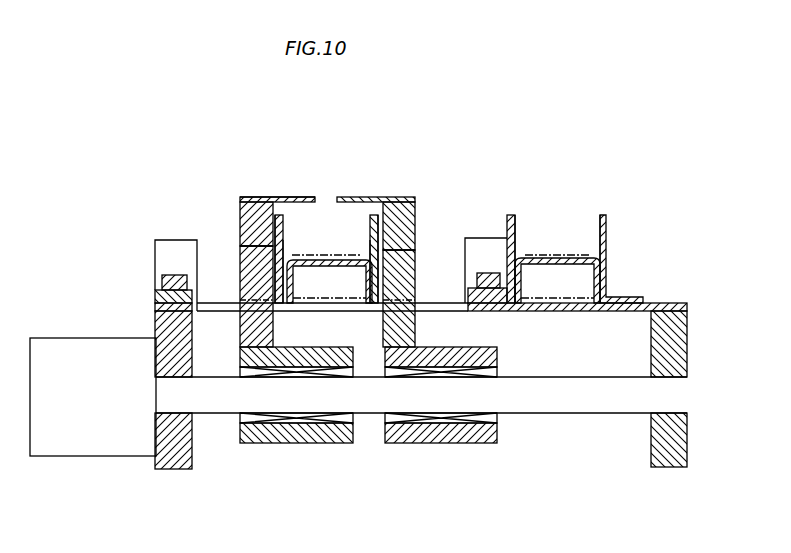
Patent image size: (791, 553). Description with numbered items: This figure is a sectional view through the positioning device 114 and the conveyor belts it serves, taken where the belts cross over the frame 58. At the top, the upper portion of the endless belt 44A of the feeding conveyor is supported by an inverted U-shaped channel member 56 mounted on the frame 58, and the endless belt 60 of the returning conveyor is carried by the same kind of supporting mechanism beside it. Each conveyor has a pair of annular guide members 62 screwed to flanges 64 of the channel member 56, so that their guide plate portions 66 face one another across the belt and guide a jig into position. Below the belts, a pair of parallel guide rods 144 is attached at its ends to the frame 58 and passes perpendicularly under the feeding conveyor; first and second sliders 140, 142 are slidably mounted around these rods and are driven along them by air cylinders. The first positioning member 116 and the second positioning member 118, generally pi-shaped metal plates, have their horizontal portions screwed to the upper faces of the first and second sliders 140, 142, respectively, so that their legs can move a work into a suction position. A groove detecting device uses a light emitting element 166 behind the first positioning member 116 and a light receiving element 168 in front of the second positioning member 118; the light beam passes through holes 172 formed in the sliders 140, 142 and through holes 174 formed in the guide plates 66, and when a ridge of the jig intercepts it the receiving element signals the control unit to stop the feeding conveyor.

The positioning device 114 is at (235, 180).
The first positioning member 116 is at (271, 197).
The second positioning member 118 is at (384, 196).
The annular guide member 62 is at (270, 215).
The guide plate portion 66 is at (285, 235).
The hole 174 is at (289, 254).
The upper portion of the endless belt 44A is at (327, 255).
The hole 172 is at (243, 251).
The light emitting element 166 is at (167, 243).
The light receiving element 168 is at (467, 257).
The channel member 56 is at (340, 263).
The flange 64 is at (288, 282).
The endless belt 60 is at (556, 253).
The frame 58 is at (669, 303).
The first slider 140 is at (261, 450).
The second slider 142 is at (430, 444).
The guide rod 144 is at (557, 414).